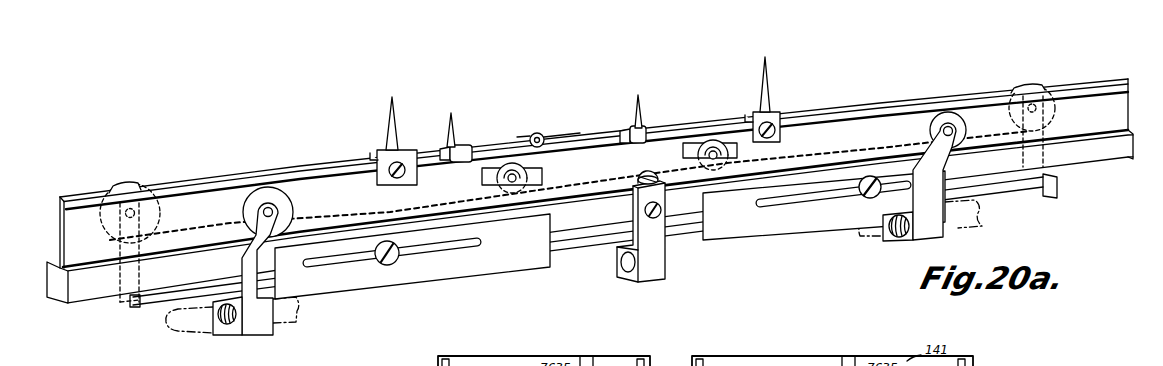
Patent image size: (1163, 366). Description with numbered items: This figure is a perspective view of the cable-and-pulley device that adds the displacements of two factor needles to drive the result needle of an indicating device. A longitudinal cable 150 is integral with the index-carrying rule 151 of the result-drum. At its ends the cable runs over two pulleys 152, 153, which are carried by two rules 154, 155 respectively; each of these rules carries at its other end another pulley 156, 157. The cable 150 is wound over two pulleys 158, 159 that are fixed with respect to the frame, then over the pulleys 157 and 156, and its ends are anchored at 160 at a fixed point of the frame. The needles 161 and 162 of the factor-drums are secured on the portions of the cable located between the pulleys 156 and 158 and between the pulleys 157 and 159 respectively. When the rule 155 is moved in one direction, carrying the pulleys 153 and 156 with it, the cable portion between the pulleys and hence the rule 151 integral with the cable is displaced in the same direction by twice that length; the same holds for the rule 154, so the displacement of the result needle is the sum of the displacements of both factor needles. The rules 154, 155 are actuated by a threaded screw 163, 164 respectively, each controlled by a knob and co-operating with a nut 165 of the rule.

The longitudinal cable 150 is at (561, 130).
The index-carrying rule 151 is at (455, 130).
The pulley 152 is at (122, 186).
The pulley 153 is at (1026, 89).
The rule 154 is at (742, 231).
The rule 155 is at (480, 266).
The pulley 156 is at (266, 196).
The pulley 157 is at (941, 110).
The pulley 158 is at (509, 166).
The pulley 159 is at (715, 150).
The anchoring point 160 is at (652, 177).
The needle 161 is at (395, 106).
The needle 162 is at (770, 76).
The threaded screw 163 is at (966, 229).
The threaded screw 164 is at (203, 334).
The nut 165 is at (235, 332).